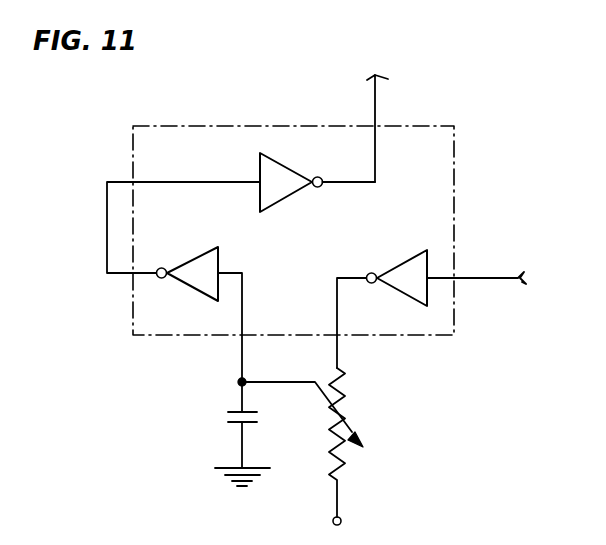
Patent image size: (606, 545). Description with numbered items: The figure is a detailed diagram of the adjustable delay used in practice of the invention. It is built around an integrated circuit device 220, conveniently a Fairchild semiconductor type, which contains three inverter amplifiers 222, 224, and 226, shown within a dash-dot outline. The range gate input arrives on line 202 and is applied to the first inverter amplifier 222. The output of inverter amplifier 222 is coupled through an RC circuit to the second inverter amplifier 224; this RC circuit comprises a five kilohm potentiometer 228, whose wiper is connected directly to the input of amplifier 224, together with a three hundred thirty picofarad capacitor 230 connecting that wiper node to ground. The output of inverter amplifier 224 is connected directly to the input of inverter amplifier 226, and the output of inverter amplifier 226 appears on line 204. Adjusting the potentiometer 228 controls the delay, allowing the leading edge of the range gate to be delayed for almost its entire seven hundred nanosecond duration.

The integrated circuit device 220 is at (457, 137).
The inverter amplifier 226 is at (289, 169).
The inverter amplifier 224 is at (203, 248).
The inverter amplifier 222 is at (402, 262).
The line 204 is at (376, 98).
The line 202 is at (480, 277).
The potentiometer 228 is at (343, 396).
The capacitor 230 is at (226, 415).